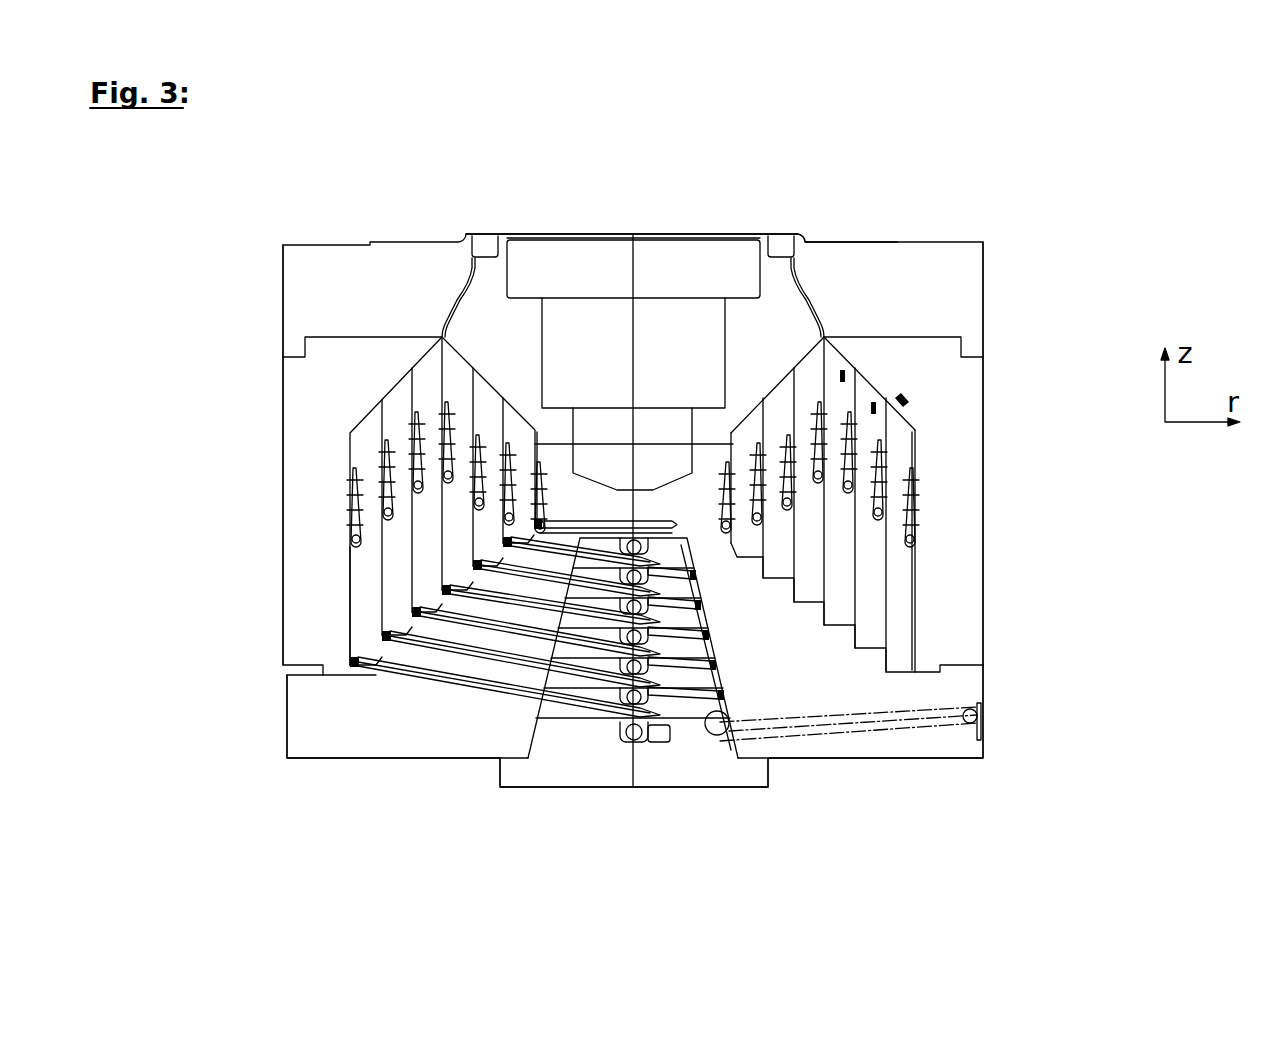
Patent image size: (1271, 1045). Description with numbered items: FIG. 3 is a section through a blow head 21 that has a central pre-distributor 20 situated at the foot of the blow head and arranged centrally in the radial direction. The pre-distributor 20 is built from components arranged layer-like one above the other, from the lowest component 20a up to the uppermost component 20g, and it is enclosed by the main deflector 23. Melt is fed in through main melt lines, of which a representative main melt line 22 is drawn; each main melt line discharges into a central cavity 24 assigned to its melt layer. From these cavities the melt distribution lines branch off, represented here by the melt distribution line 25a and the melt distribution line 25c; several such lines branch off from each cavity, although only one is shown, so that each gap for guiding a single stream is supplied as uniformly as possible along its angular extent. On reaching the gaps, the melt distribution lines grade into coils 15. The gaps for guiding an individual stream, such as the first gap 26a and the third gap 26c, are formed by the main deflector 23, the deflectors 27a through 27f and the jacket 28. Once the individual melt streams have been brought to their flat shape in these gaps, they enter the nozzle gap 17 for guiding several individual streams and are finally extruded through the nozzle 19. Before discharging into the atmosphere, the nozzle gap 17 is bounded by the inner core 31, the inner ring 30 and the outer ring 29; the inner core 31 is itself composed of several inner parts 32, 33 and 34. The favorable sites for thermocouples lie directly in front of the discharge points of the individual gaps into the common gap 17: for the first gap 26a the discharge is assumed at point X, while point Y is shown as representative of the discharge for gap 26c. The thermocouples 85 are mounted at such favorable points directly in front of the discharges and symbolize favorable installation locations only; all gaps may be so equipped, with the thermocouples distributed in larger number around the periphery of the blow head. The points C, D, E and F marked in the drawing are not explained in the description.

The coils 15 is at (352, 502).
The nozzle gap for guiding several individual streams 17 is at (457, 298).
The nozzle 19 is at (792, 220).
The central pre-distributor 20 is at (500, 788).
The component of the central pre-distributor 20a is at (657, 767).
The component of the central pre-distributor 20g is at (667, 545).
The blow head 21 is at (925, 210).
The main melt line 22 is at (947, 723).
The main deflector 23 is at (303, 725).
The central cavity 24 is at (627, 722).
The melt distribution line 25a is at (418, 672).
The melt distribution line 25c is at (665, 645).
The gap for guiding a single stream 26a is at (352, 523).
The gap for guiding a single stream 26c is at (855, 450).
The deflector 27a is at (905, 597).
The deflector 27f is at (745, 537).
The jacket 28 is at (323, 398).
The outer ring 29 is at (963, 275).
The inner ring 30 is at (781, 246).
The inner core 31 is at (790, 310).
The inner part of the inner core 32 is at (603, 430).
The inner part of the inner core 33 is at (667, 338).
The inner part of the inner core 34 is at (700, 258).
The thermocouples 85 is at (875, 408).
The position C is at (980, 722).
The position D is at (610, 720).
The position E is at (350, 663).
The position F is at (348, 547).
The point of discharge X is at (885, 393).
The point of discharge Y is at (853, 363).